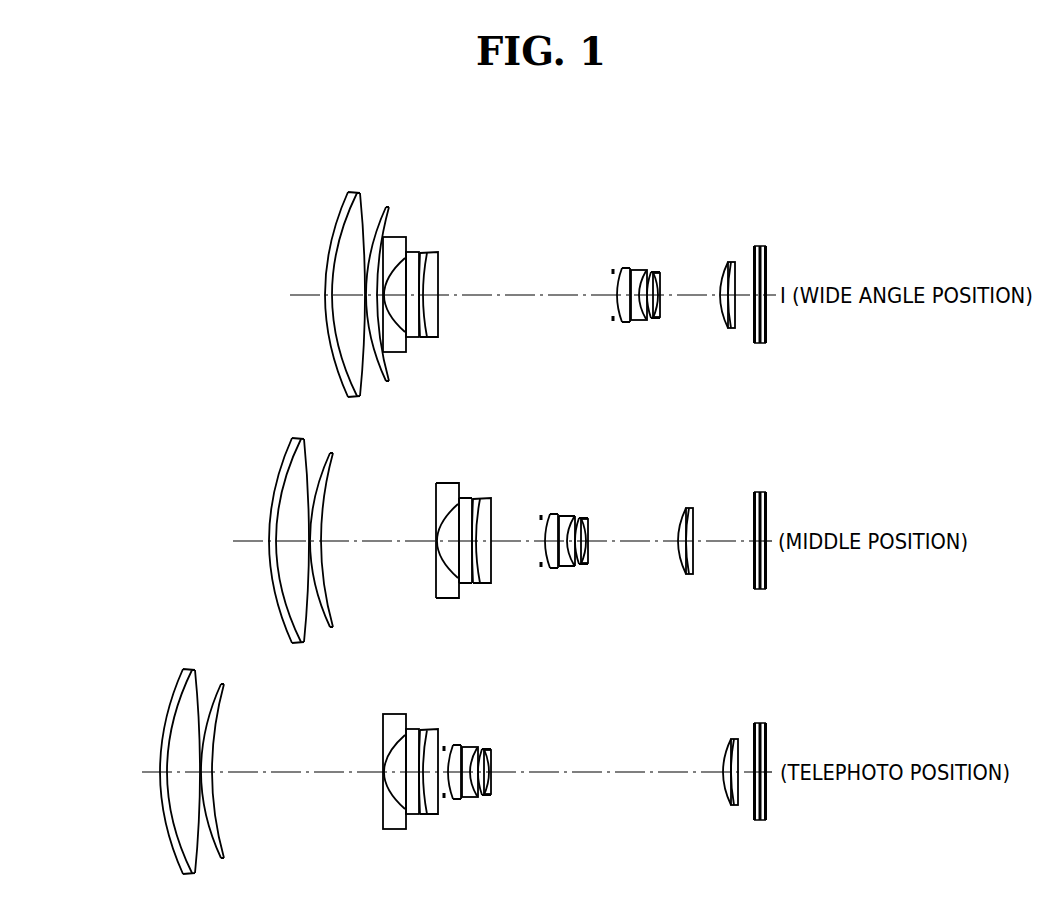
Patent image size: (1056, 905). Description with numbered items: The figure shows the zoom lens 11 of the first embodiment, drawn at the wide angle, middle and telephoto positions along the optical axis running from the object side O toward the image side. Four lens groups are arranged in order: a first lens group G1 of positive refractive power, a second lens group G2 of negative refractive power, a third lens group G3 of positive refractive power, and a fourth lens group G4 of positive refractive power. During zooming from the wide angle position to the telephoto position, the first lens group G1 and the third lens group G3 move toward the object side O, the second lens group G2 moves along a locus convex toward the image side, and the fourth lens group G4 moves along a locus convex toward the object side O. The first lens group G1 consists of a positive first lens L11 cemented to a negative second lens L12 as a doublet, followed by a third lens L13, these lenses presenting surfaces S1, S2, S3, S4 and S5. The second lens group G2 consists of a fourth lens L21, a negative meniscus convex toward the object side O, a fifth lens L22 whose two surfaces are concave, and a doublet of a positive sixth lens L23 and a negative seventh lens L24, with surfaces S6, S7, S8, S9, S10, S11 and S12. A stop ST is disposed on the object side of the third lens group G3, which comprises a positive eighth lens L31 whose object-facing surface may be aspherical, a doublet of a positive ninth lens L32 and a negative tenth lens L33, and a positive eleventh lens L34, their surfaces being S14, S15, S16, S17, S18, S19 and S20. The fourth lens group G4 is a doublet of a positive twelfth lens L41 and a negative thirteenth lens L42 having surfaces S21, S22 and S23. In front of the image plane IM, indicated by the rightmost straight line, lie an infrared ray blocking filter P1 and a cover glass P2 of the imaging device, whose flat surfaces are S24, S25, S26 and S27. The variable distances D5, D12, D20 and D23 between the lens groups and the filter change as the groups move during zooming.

The zoom lens 11 is at (829, 150).
The object side O is at (522, 297).
The first lens group G1 is at (385, 128).
The second lens group G2 is at (439, 128).
The third lens group G3 is at (662, 128).
The fourth lens group G4 is at (742, 128).
The first lens L11 is at (348, 192).
The second lens L12 is at (359, 193).
The third lens L13 is at (382, 207).
The fourth lens L21 is at (402, 237).
The fifth lens L22 is at (422, 252).
The sixth lens L23 is at (424, 262).
The seventh lens L24 is at (437, 266).
The eighth lens L31 is at (625, 270).
The ninth lens L32 is at (632, 268).
The tenth lens L33 is at (650, 270).
The eleventh lens L34 is at (660, 281).
The twelfth lens L41 is at (722, 267).
The thirteenth lens L42 is at (734, 262).
The infrared ray blocking filter P1 is at (757, 246).
The cover glass P2 is at (764, 246).
The image plane IM is at (768, 256).
The variable distance D5 is at (388, 312).
The variable distance D12 is at (525, 297).
The variable distance D20 is at (688, 297).
The variable distance D23 is at (743, 300).
The stop ST is at (541, 567).
The lens surface S1 is at (275, 497).
The lens surface S2 is at (288, 478).
The lens surface S3 is at (308, 470).
The lens surface S4 is at (322, 618).
The lens surface S5 is at (326, 580).
The lens surface S6 is at (433, 520).
The lens surface S7 is at (450, 510).
The lens surface S8 is at (453, 582).
The lens surface S9 is at (473, 592).
The lens surface S10 is at (472, 498).
The lens surface S11 is at (488, 502).
The lens surface S12 is at (492, 563).
The lens surface S14 is at (552, 513).
The lens surface S15 is at (560, 513).
The lens surface S16 is at (562, 568).
The lens surface S17 is at (575, 567).
The lens surface S18 is at (582, 518).
The lens surface S19 is at (582, 537).
The lens surface S20 is at (588, 553).
The lens surface S21 is at (682, 527).
The lens surface S22 is at (692, 513).
The lens surface S23 is at (695, 527).
The lens surface S24 is at (753, 558).
The lens surface S25 is at (755, 577).
The lens surface S26 is at (755, 500).
The lens surface S27 is at (767, 507).